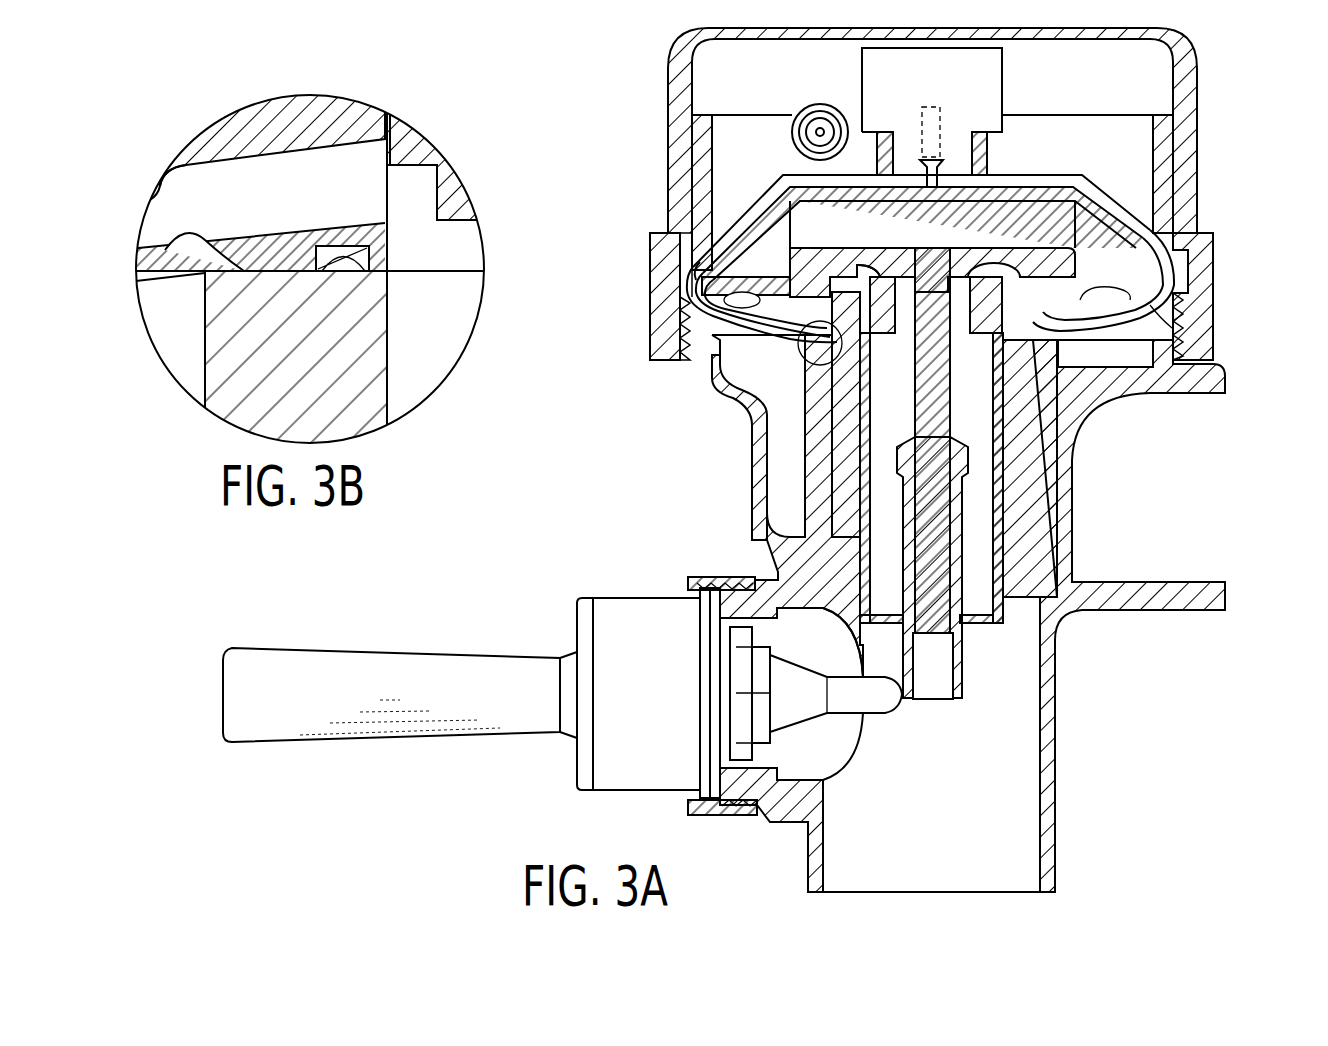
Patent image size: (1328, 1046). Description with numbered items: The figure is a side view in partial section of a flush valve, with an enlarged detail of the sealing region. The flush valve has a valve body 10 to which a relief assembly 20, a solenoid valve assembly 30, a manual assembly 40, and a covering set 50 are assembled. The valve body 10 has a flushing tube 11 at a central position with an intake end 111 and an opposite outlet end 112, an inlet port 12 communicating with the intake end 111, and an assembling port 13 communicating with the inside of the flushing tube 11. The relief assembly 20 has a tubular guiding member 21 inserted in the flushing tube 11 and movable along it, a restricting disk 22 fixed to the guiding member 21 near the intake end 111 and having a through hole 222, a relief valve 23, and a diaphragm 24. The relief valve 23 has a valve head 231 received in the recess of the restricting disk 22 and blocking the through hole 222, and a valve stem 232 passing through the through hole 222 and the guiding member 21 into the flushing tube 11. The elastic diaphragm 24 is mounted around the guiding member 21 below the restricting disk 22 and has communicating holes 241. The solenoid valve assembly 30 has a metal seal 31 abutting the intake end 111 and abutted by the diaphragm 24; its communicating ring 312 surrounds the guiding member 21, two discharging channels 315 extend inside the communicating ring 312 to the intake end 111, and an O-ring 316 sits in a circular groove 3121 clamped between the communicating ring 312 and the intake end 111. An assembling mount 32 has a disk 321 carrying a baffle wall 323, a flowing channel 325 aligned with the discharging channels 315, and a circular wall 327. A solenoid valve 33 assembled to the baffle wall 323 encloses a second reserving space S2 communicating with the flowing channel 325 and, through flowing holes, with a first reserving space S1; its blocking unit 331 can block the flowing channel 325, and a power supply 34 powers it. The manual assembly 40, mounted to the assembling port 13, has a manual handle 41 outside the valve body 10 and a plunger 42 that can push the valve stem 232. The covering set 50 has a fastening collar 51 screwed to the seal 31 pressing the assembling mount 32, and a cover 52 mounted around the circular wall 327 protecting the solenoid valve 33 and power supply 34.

In FIG. 3A, the valve body 10 is at (793, 845).
In FIG. 3A, the flushing tube 11 is at (1072, 802).
In FIG. 3A, the inlet port 12 is at (1205, 596).
In FIG. 3A, the assembling port 13 is at (737, 590).
In FIG. 3A, the outlet end 112 is at (1063, 902).
In FIG. 3A, the intake end 111 is at (1088, 340).
In FIG. 3B, the intake end 111 is at (198, 238).
In FIG. 3A, the relief assembly 20 is at (1000, 663).
In FIG. 3A, the guiding member 21 is at (1000, 604).
In FIG. 3A, the restricting disk 22 is at (888, 345).
In FIG. 3A, the relief valve 23 is at (960, 714).
In FIG. 3A, the through hole 222 is at (897, 316).
In FIG. 3A, the valve head 231 is at (1008, 257).
In FIG. 3A, the valve stem 232 is at (960, 680).
In FIG. 3A, the diaphragm 24 is at (1195, 258).
In FIG. 3A, the communicating holes 241 is at (1162, 275).
In FIG. 3A, the solenoid valve assembly 30 is at (1117, 66).
In FIG. 3A, the seal 31 is at (665, 338).
In FIG. 3A, the assembling mount 32 is at (1150, 99).
In FIG. 3A, the solenoid valve 33 is at (1016, 113).
In FIG. 3A, the power supply 34 is at (800, 110).
In FIG. 3A, the communicating ring 312 is at (820, 320).
In FIG. 3B, the communicating ring 312 is at (373, 103).
In FIG. 3B, the circular groove 3121 is at (346, 264).
In FIG. 3A, the discharging channels 315 is at (1162, 322).
In FIG. 3B, the discharging channels 315 is at (161, 182).
In FIG. 3B, the O-ring 316 is at (352, 255).
In FIG. 3A, the disk 321 is at (733, 196).
In FIG. 3A, the baffle wall 323 is at (880, 148).
In FIG. 3A, the flowing channel 325 is at (688, 268).
In FIG. 3A, the circular wall 327 is at (1165, 128).
In FIG. 3A, the blocking unit 331 is at (945, 142).
In FIG. 3A, the manual assembly 40 is at (488, 637).
In FIG. 3A, the manual handle 41 is at (398, 680).
In FIG. 3A, the plunger 42 is at (872, 704).
In FIG. 3A, the covering set 50 is at (1224, 340).
In FIG. 3A, the fastening collar 51 is at (1205, 283).
In FIG. 3A, the cover 52 is at (705, 45).
In FIG. 3A, the first reserving space S1 is at (979, 239).
In FIG. 3A, the second reserving space S2 is at (907, 157).